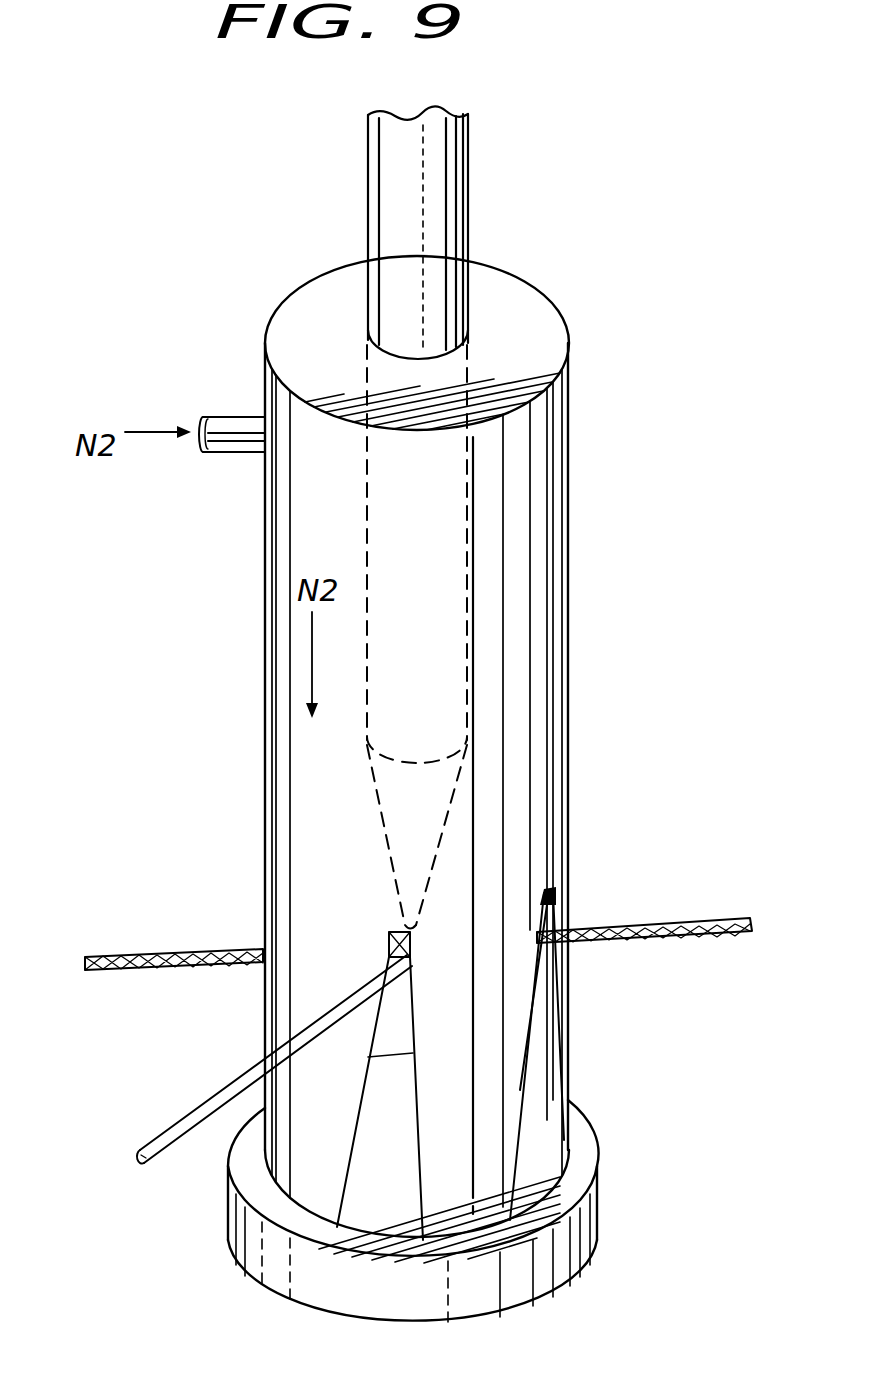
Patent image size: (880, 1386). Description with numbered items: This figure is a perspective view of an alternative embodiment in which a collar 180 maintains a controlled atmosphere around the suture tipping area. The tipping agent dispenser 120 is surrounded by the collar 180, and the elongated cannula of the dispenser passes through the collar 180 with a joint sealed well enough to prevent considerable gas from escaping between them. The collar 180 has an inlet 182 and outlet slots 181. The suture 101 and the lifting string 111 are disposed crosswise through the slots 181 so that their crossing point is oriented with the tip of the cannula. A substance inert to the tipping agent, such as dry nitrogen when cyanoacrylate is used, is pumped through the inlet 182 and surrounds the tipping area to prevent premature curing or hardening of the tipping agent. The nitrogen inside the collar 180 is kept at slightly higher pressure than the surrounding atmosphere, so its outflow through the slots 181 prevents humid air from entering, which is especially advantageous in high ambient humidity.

The suture 101 is at (137, 955).
The lifting string 111 is at (194, 1112).
The tipping agent dispenser 120 is at (447, 372).
The collar 180 is at (518, 626).
The outlet slots 181 is at (255, 999).
The inlet 182 is at (240, 462).